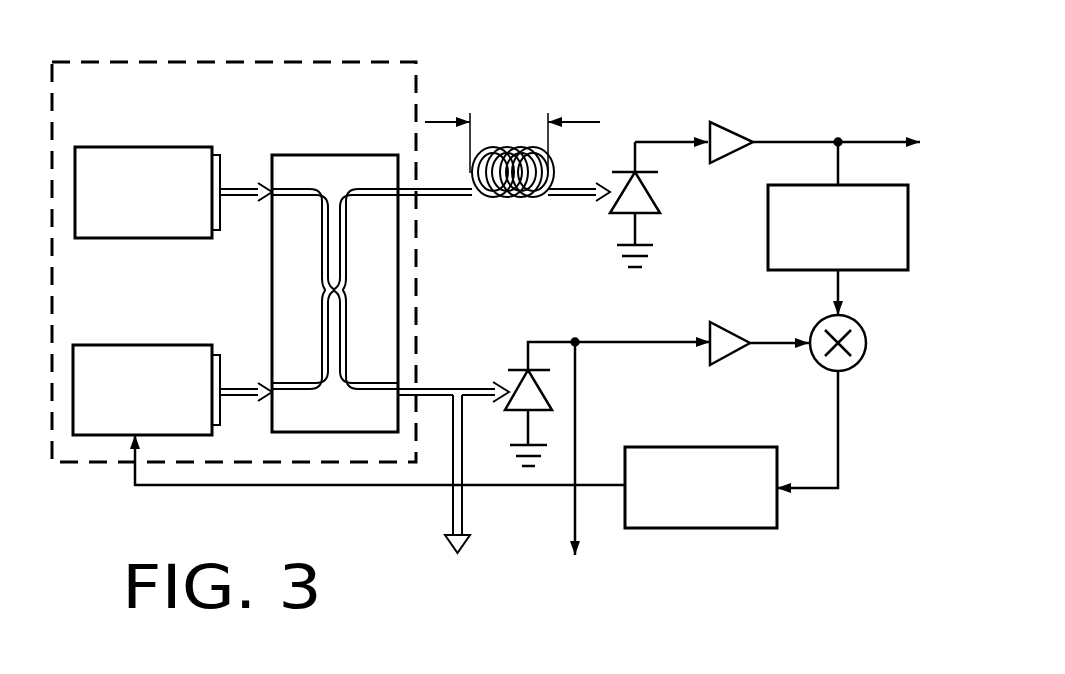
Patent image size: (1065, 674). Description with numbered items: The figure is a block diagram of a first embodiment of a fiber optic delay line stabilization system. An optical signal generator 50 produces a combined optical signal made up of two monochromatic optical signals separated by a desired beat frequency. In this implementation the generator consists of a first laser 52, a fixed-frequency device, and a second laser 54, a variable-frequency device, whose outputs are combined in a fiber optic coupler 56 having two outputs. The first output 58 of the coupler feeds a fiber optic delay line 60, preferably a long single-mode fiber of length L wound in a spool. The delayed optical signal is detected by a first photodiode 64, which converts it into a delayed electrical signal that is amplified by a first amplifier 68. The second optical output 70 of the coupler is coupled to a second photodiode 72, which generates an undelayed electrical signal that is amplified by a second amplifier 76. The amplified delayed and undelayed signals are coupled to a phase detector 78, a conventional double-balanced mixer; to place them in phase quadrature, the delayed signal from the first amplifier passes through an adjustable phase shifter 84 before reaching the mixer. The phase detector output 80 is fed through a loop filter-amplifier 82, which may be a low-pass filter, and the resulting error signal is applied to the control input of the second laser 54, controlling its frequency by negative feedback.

The optical signal generator 50 is at (70, 62).
The first laser 52 is at (85, 150).
The second laser 54 is at (83, 348).
The fiber optic coupler 56 is at (372, 155).
The first output 58 is at (437, 197).
The fiber optic delay line 60 is at (528, 150).
The first photodiode 64 is at (642, 198).
The first amplifier 68 is at (722, 133).
The second optical output 70 is at (435, 388).
The second photodiode 72 is at (510, 390).
The second amplifier 76 is at (727, 332).
The phase detector 78 is at (860, 335).
The phase detector output 80 is at (840, 430).
The loop filter-amplifier 82 is at (648, 448).
The adjustable phase shifter 84 is at (768, 238).